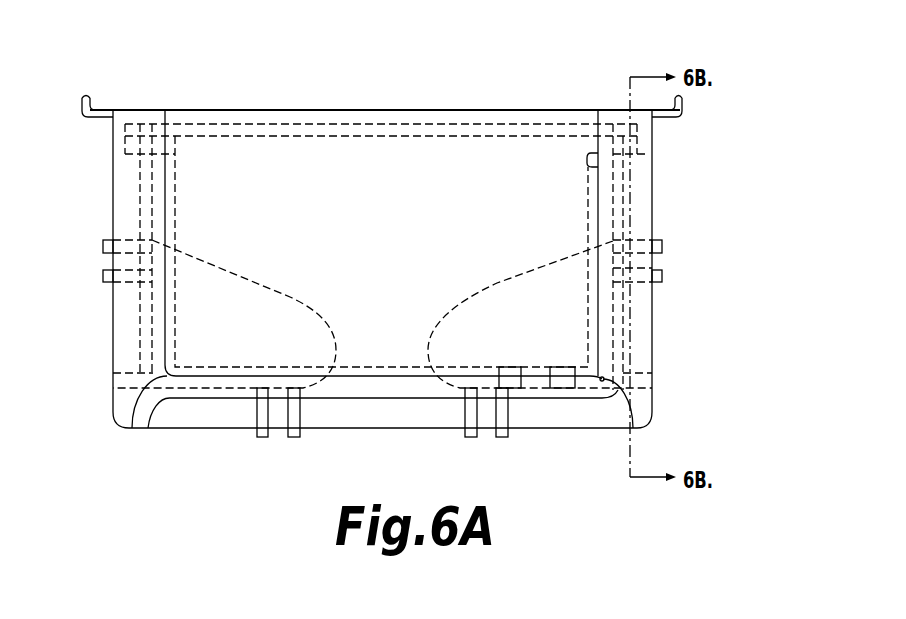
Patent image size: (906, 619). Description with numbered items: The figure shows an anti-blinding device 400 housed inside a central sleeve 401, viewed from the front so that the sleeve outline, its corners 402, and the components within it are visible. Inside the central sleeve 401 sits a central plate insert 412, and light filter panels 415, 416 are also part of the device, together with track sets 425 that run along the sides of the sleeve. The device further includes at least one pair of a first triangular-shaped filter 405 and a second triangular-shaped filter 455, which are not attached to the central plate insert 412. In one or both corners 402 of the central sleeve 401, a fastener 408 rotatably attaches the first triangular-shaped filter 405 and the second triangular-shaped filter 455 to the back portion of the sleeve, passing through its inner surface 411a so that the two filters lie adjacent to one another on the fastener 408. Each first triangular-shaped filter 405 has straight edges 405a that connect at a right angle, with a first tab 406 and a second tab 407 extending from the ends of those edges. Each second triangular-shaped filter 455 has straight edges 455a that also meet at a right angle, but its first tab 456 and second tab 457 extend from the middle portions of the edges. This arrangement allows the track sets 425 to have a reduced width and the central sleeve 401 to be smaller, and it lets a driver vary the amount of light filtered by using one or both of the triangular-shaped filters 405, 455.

The anti-blinding device 400 is at (94, 87).
The central sleeve 401 is at (652, 293).
The corner 402 is at (118, 419).
The first triangular-shaped filter 405 is at (382, 309).
The second triangular-shaped filter 455 is at (258, 307).
The straight edges 405a is at (384, 362).
The straight edges 455a is at (188, 387).
The first tab 406 is at (291, 440).
The first tab 456 is at (258, 439).
The second tab 407 is at (105, 243).
The second tab 457 is at (103, 277).
The fastener 408 is at (153, 429).
The inner surface 411a is at (597, 415).
The central plate insert 412 is at (623, 187).
The light filter panel 415 is at (538, 102).
The light filter panel 416 is at (590, 157).
The track set 425 is at (127, 192).